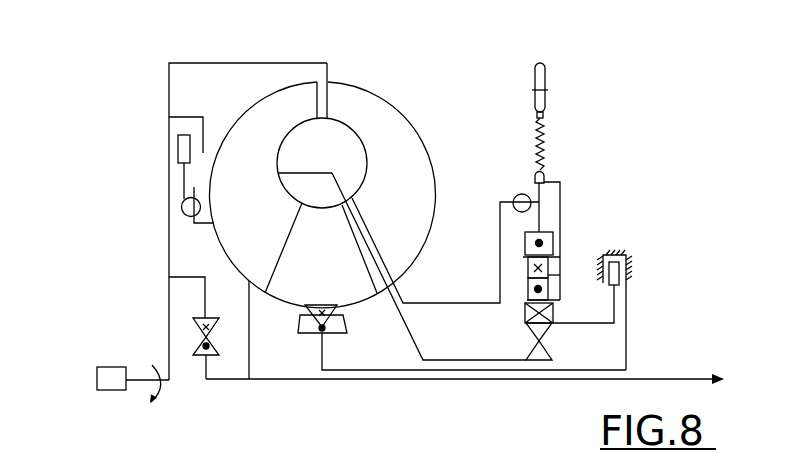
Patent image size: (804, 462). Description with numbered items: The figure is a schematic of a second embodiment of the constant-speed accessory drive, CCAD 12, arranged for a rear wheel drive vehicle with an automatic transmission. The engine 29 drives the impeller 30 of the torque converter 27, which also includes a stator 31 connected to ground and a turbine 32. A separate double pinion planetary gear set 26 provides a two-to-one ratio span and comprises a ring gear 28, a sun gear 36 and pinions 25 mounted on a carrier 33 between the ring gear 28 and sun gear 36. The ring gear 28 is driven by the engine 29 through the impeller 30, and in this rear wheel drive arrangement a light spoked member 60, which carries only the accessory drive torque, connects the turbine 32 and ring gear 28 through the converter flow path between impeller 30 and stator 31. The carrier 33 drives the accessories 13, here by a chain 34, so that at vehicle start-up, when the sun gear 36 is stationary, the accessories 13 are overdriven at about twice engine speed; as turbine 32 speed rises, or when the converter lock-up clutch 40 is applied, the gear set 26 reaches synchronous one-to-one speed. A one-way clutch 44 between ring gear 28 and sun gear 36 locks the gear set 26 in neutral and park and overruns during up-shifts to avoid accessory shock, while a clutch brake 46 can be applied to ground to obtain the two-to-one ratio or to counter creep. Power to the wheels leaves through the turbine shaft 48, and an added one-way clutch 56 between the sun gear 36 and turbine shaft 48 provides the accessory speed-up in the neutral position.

The CCAD 12 is at (410, 68).
The accessories 13 is at (547, 73).
The pinions 25 is at (528, 284).
The double pinion planetary gear set 26 is at (585, 257).
The torque converter 27 is at (352, 72).
The ring gear 28 is at (527, 233).
The engine 29 is at (103, 366).
The impeller 30 is at (403, 112).
The stator 31 is at (290, 305).
The turbine 32 is at (258, 103).
The carrier 33 is at (560, 275).
The chain 34 is at (545, 125).
The sun gear 36 is at (523, 313).
The converter lock-up clutch 40 is at (178, 143).
The one-way clutch 44 is at (193, 328).
The clutch brake 46 is at (617, 284).
The turbine shaft 48 is at (432, 380).
The one-way clutch 56 is at (546, 344).
The spoked member 60 is at (426, 356).